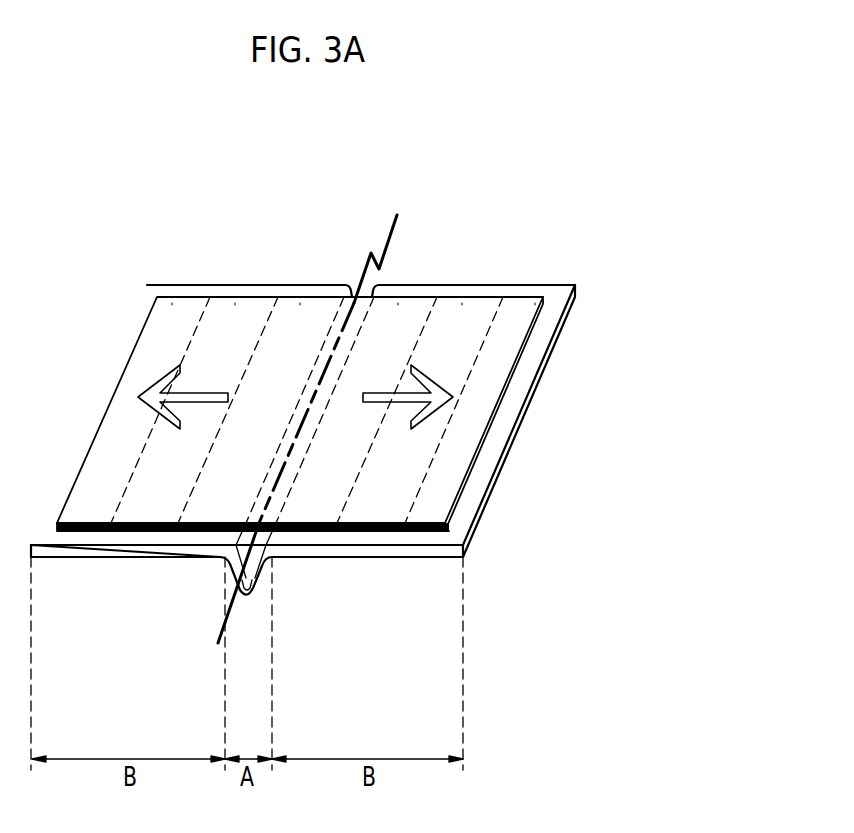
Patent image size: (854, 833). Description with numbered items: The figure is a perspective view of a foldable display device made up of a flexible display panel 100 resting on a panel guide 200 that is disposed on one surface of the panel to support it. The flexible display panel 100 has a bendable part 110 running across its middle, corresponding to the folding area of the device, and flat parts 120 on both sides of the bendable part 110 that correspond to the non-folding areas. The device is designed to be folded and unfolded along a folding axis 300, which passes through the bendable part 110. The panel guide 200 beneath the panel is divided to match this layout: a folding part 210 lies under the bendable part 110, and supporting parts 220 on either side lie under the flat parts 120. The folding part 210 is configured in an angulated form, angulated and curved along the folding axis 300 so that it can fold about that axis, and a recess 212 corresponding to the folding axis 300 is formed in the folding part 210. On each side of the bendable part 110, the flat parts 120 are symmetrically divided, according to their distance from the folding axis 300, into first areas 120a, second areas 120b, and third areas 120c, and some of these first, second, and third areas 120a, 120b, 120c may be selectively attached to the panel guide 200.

The flexible display panel 100 is at (522, 158).
The bendable part 110 is at (343, 292).
The flat parts 120 is at (347, 193).
The first areas 120a is at (300, 303).
The second areas 120b is at (235, 303).
The third areas 120c is at (172, 303).
The panel guide 200 is at (363, 683).
The folding part 210 is at (267, 582).
The recess 212 is at (245, 590).
The supporting parts 220 is at (97, 537).
The folding axis 300 is at (232, 610).